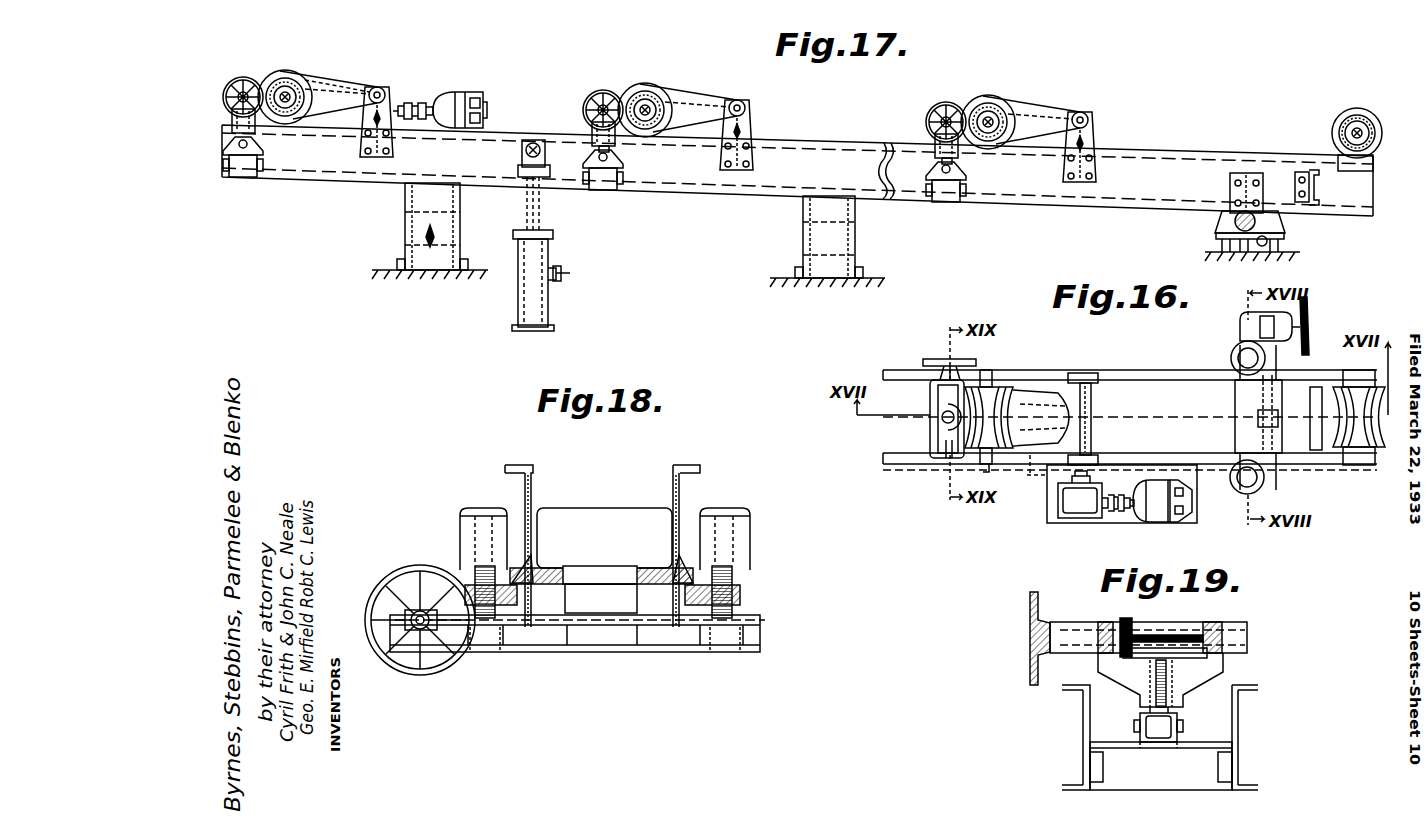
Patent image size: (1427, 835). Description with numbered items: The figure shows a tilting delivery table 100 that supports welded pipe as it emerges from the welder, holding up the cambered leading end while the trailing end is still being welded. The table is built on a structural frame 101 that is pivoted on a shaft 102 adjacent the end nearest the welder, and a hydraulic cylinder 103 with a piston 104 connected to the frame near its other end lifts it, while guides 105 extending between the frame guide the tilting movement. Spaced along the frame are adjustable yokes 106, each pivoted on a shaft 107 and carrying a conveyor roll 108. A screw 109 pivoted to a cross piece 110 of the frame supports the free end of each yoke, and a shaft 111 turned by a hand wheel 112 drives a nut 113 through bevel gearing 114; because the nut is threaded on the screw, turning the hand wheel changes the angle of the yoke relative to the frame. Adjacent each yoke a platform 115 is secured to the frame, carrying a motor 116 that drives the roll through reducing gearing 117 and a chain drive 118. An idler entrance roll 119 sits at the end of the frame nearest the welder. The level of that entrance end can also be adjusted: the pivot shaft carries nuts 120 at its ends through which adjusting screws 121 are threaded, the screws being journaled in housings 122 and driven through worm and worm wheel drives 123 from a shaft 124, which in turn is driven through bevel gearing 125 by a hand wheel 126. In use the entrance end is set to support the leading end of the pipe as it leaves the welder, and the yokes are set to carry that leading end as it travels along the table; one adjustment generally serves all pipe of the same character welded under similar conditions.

In FIG. 17, the tilting delivery table 100 is at (776, 232).
In FIG. 17, the structural frame 101 is at (694, 186).
In FIG. 16, the structural frame 101 is at (1122, 376).
In FIG. 18, the structural frame 101 is at (531, 477).
In FIG. 19, the structural frame 101 is at (1086, 717).
In FIG. 17, the shaft 102 is at (1226, 226).
In FIG. 18, the shaft 102 is at (670, 600).
In FIG. 17, the hydraulic cylinder 103 is at (521, 300).
In FIG. 17, the piston 104 is at (538, 221).
In FIG. 17, the guides 105 is at (407, 220).
In FIG. 17, the adjustable yoke 106 is at (348, 80).
In FIG. 16, the adjustable yoke 106 is at (1057, 386).
In FIG. 17, the shaft 107 is at (393, 90).
In FIG. 16, the shaft 107 is at (1092, 420).
In FIG. 17, the conveyor roll 108 is at (316, 56).
In FIG. 16, the conveyor roll 108 is at (1015, 388).
In FIG. 17, the screw 109 is at (614, 158).
In FIG. 19, the screw 109 is at (1195, 692).
In FIG. 17, the cross piece 110 is at (620, 178).
In FIG. 19, the cross piece 110 is at (1185, 752).
In FIG. 17, the shaft 111 is at (608, 102).
In FIG. 16, the shaft 111 is at (932, 428).
In FIG. 19, the shaft 111 is at (1158, 640).
In FIG. 17, the hand wheel 112 is at (600, 92).
In FIG. 16, the hand wheel 112 is at (938, 359).
In FIG. 19, the hand wheel 112 is at (1037, 606).
In FIG. 19, the nut 113 is at (1136, 700).
In FIG. 17, the bevel gearing 114 is at (592, 124).
In FIG. 19, the bevel gearing 114 is at (1138, 614).
In FIG. 16, the platform 115 is at (1180, 524).
In FIG. 17, the motor 116 is at (455, 96).
In FIG. 16, the motor 116 is at (1157, 508).
In FIG. 16, the reducing gearing 117 is at (1080, 512).
In FIG. 17, the chain drive 118 is at (365, 76).
In FIG. 16, the chain drive 118 is at (1031, 480).
In FIG. 17, the idler entrance roll 119 is at (1340, 121).
In FIG. 18, the nut 120 is at (470, 598).
In FIG. 16, the adjusting screw 121 is at (1236, 349).
In FIG. 18, the adjusting screw 121 is at (728, 582).
In FIG. 18, the housing 122 is at (463, 532).
In FIG. 16, the worm and worm wheel drive 123 is at (1236, 358).
In FIG. 18, the worm and worm wheel drive 123 is at (497, 648).
In FIG. 16, the shaft 124 is at (1262, 437).
In FIG. 18, the shaft 124 is at (545, 618).
In FIG. 16, the bevel gearing 125 is at (1240, 318).
In FIG. 18, the bevel gearing 125 is at (425, 668).
In FIG. 16, the hand wheel 126 is at (1306, 312).
In FIG. 18, the hand wheel 126 is at (417, 566).